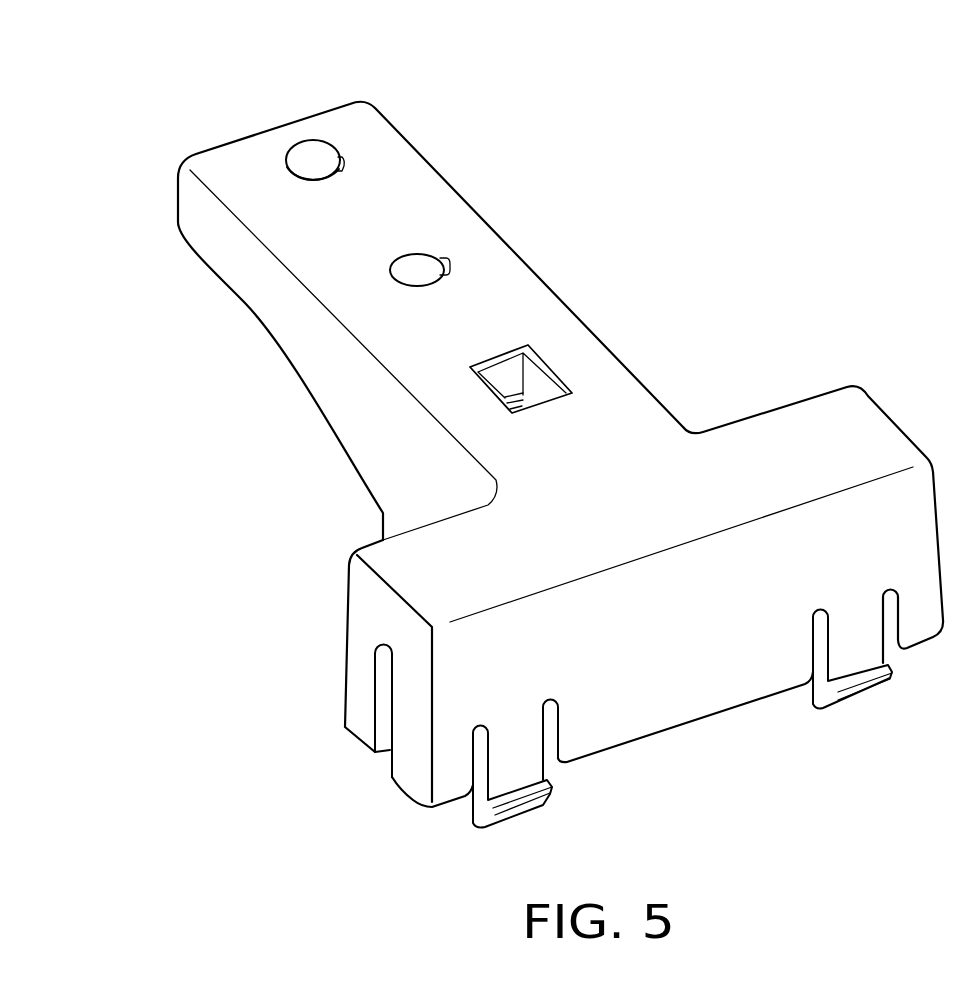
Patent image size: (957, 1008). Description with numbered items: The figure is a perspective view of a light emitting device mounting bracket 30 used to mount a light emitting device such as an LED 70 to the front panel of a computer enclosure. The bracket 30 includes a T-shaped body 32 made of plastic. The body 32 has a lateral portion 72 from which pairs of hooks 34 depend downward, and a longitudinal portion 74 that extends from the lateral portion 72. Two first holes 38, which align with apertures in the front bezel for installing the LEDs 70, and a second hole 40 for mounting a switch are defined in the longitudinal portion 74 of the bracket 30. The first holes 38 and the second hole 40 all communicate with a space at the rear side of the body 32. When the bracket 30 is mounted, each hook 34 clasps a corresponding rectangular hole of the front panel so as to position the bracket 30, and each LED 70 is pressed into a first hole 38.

The light emitting device mounting bracket 30 is at (863, 365).
The T-shaped body 32 is at (428, 480).
The hooks 34 is at (513, 767).
The first holes 38 is at (423, 263).
The second hole 40 is at (547, 380).
The LED 70 is at (315, 157).
The lateral portion 72 is at (465, 583).
The longitudinal portion 74 is at (237, 253).